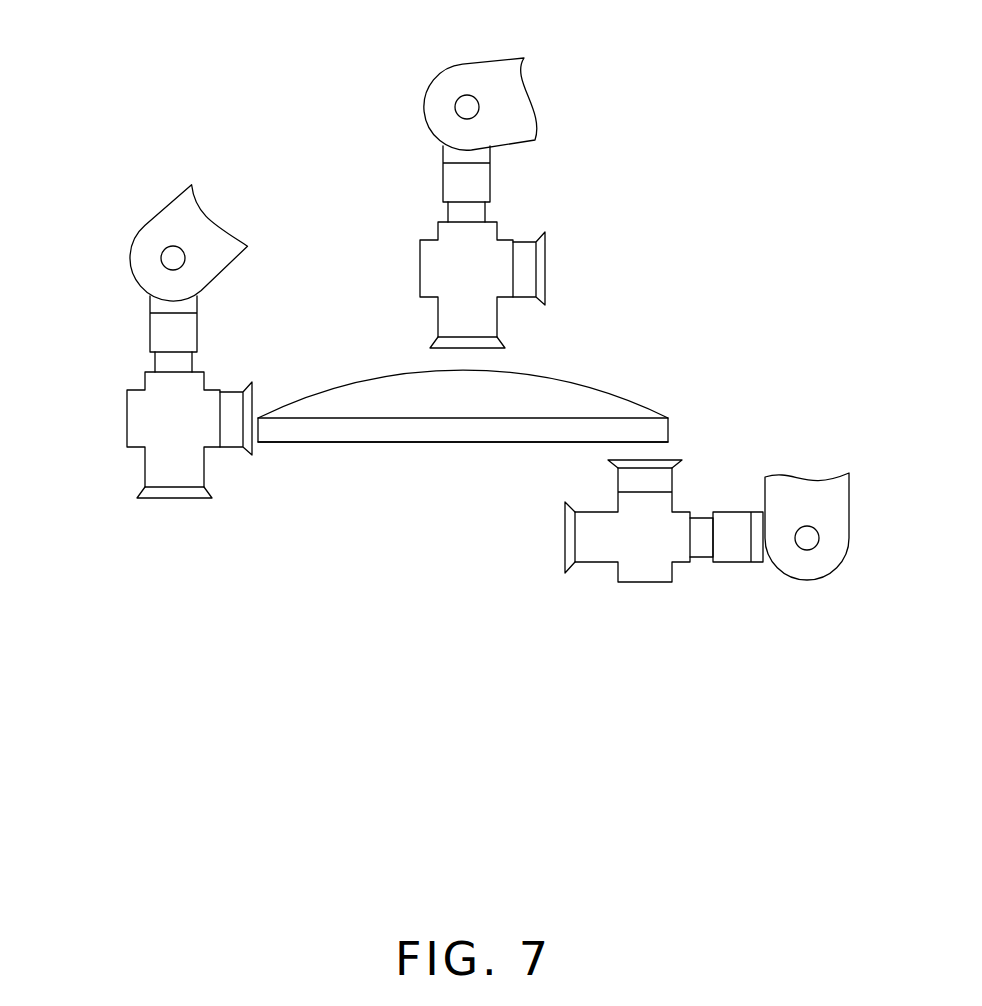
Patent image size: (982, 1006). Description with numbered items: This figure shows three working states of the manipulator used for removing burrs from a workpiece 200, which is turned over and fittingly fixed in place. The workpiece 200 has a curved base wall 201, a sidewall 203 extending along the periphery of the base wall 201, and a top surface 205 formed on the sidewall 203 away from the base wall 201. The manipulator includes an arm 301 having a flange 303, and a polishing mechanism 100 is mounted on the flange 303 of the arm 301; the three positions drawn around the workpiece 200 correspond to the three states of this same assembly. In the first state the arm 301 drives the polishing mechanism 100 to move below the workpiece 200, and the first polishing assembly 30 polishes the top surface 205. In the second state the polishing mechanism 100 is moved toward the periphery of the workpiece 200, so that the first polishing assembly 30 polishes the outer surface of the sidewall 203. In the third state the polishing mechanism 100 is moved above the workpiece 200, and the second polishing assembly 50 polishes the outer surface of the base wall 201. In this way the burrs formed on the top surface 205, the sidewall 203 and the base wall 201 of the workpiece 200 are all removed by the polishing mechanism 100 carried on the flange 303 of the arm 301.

The first polishing assembly 30 is at (543, 267).
The second polishing assembly 50 is at (500, 340).
The polishing mechanism 100 is at (645, 563).
The workpiece 200 is at (528, 377).
The base wall 201 is at (595, 385).
The sidewall 203 is at (670, 428).
The top surface 205 is at (615, 442).
The arm 301 is at (798, 492).
The flange 303 is at (460, 77).